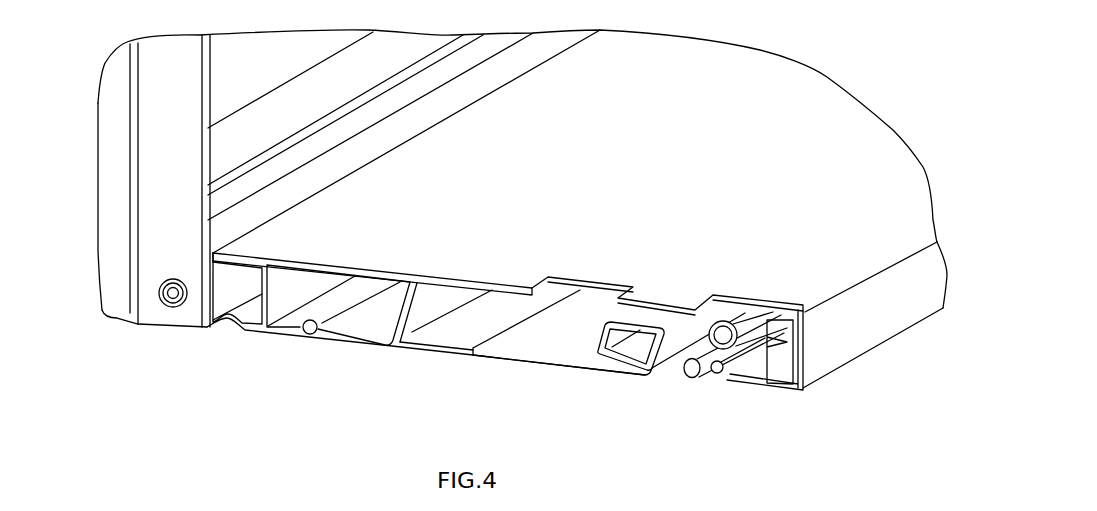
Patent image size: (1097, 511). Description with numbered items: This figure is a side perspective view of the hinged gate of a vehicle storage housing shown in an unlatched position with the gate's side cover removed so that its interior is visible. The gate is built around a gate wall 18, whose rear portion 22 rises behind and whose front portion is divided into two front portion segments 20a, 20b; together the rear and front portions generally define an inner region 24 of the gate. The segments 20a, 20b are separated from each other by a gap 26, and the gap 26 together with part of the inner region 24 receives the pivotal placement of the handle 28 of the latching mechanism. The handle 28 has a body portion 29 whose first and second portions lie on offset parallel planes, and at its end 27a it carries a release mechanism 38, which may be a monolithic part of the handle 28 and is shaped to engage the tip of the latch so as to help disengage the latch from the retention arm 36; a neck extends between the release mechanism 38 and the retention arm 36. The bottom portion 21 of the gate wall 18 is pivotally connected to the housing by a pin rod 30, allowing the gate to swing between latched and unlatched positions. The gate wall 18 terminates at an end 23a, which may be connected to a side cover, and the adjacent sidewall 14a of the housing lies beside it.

The gate wall 18 is at (815, 92).
The rear portion 22 is at (893, 190).
The bottom portion 21 is at (216, 254).
The sidewall 14a is at (110, 293).
The pin rod 30 is at (167, 305).
The inner region 24 is at (467, 323).
The gap 26 is at (437, 330).
The front portion segment 20b is at (337, 343).
The handle 28 is at (570, 367).
The end of handle 27a is at (527, 362).
The body portion 29 is at (647, 378).
The release mechanism 38 is at (705, 378).
The retention arm 36 is at (790, 353).
The end of gate wall 23a is at (720, 380).
The front portion segment 20a is at (768, 390).